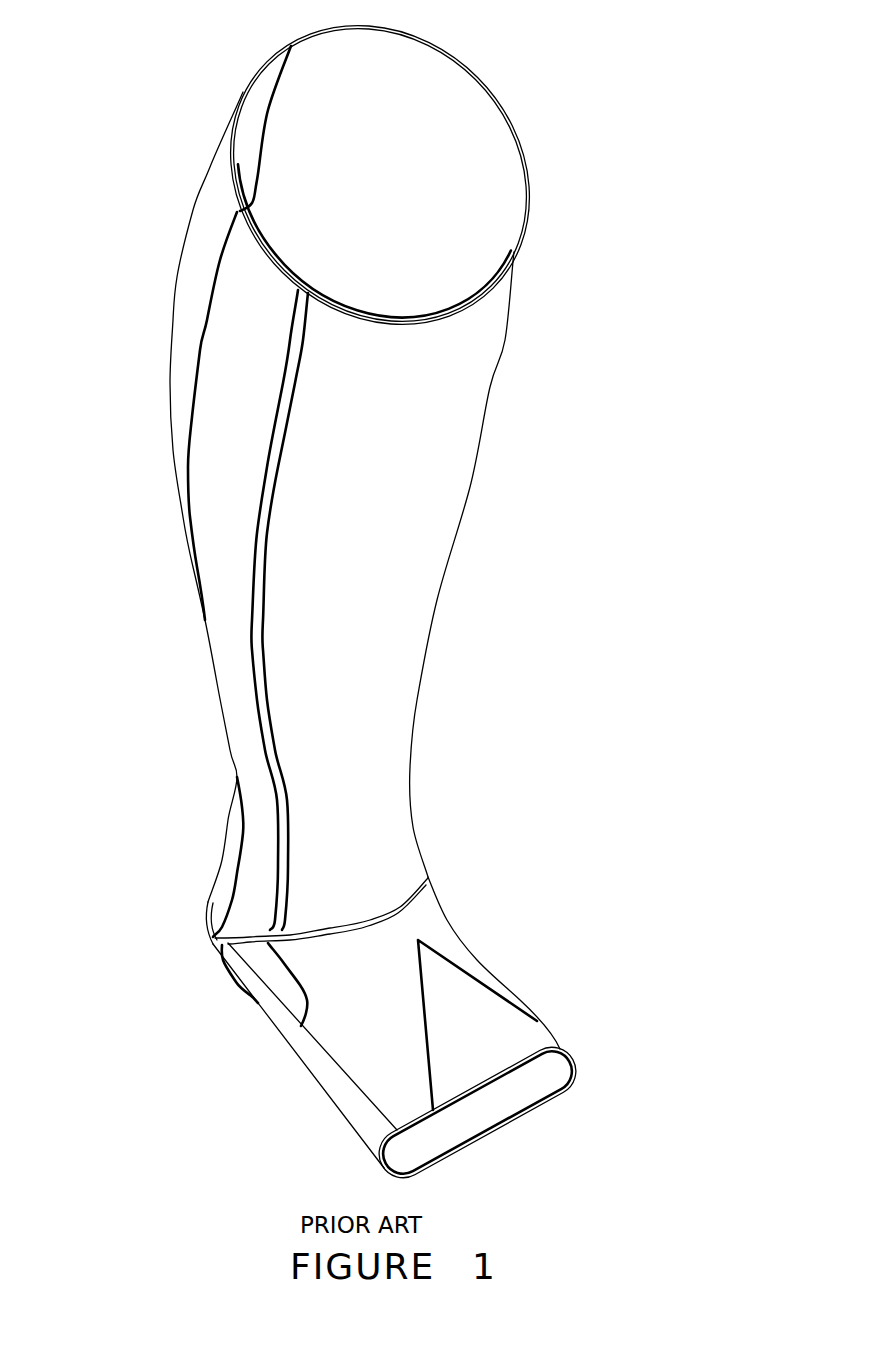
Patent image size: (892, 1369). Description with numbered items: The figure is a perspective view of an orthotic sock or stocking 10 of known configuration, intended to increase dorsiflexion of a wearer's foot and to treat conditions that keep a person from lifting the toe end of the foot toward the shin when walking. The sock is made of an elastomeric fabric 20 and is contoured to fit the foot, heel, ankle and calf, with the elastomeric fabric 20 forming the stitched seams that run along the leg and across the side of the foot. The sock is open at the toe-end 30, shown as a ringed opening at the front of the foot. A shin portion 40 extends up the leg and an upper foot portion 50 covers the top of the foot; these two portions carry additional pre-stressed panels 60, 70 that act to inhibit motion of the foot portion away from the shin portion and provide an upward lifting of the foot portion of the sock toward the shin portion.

The orthotic sock 10 is at (560, 141).
The elastomeric fabric 20 is at (204, 215).
The toe-end 30 is at (577, 1058).
The shin portion 40 is at (482, 501).
The upper foot portion 50 is at (478, 914).
The pre-stressed panel 60 is at (447, 390).
The pre-stressed panel 70 is at (357, 983).